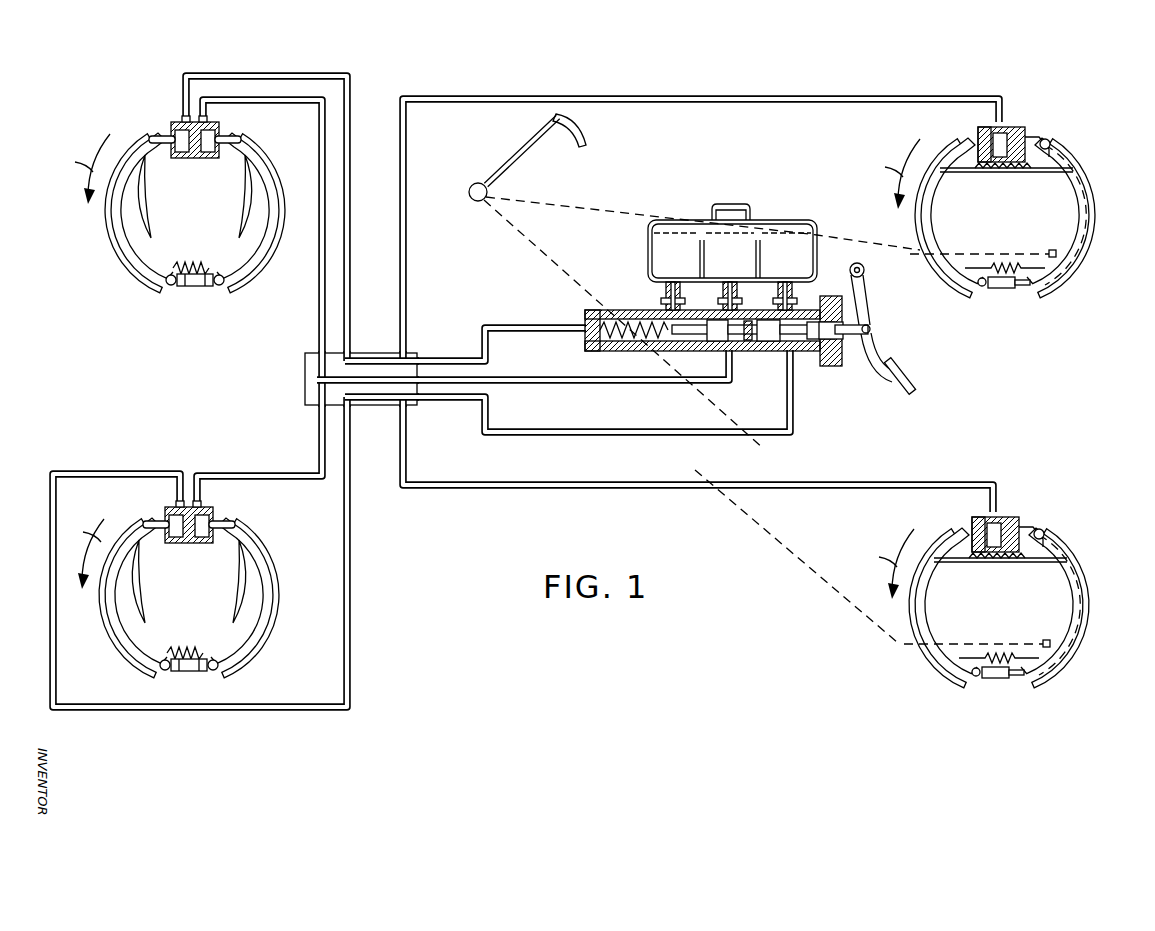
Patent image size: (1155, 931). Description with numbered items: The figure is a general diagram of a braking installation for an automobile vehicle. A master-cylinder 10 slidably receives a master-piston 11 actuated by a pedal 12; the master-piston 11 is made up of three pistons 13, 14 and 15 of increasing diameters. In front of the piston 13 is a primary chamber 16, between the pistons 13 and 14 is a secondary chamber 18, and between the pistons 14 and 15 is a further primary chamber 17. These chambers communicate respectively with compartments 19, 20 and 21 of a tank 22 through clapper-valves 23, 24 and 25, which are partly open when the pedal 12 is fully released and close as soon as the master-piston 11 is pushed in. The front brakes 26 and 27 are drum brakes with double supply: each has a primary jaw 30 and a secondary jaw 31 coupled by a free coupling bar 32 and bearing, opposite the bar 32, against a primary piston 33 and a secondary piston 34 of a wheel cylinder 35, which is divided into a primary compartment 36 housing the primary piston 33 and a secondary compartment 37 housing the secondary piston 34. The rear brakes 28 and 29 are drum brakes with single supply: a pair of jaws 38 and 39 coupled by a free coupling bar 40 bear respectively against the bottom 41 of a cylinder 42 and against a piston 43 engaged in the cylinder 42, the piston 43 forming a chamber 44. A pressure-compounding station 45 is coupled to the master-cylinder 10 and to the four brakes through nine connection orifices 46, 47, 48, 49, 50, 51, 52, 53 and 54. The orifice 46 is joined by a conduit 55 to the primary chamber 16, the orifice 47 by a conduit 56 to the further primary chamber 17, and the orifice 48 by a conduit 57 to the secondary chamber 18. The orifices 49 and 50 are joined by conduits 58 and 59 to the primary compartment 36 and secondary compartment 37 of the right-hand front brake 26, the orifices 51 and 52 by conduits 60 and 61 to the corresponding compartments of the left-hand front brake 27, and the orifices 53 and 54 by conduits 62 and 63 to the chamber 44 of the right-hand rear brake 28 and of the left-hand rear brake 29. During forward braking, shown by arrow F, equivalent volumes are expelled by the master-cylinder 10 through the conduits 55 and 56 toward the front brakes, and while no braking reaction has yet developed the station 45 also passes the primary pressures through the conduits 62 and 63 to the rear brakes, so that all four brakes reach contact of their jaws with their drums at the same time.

The master-cylinder 10 is at (746, 321).
The master-piston 11 is at (853, 332).
The pedal 12 is at (912, 380).
The piston 13 is at (712, 340).
The piston 14 is at (775, 352).
The piston 15 is at (838, 360).
The primary chamber 16 is at (626, 350).
The further primary chamber 17 is at (814, 352).
The secondary chamber 18 is at (752, 352).
The compartment 19 is at (664, 262).
The compartment 20 is at (778, 262).
The compartment 21 is at (718, 262).
The tank 22 is at (732, 231).
The clapper-valve 23 is at (664, 306).
The clapper-valve 24 is at (779, 306).
The clapper-valve 25 is at (724, 306).
The front brake 26 is at (181, 200).
The front brake 27 is at (191, 589).
The rear brake 28 is at (999, 206).
The rear brake 29 is at (988, 594).
The primary jaw 30 is at (118, 213).
The secondary jaw 31 is at (260, 214).
The free coupling bar 32 is at (195, 293).
The primary piston 33 is at (199, 138).
The secondary piston 34 is at (234, 118).
The wheel cylinder 35 is at (165, 99).
The primary compartment 36 is at (169, 165).
The secondary compartment 37 is at (217, 165).
The jaw 38 is at (937, 218).
The jaw 39 is at (1078, 218).
The free coupling bar 40 is at (1005, 297).
The bottom 41 is at (959, 135).
The cylinder 42 is at (1001, 121).
The piston 43 is at (1061, 135).
The chamber 44 is at (1014, 119).
The pressure-compounding station 45 is at (351, 373).
The connection orifice 46 is at (337, 355).
The connection orifice 47 is at (336, 406).
The connection orifice 48 is at (316, 381).
The connection orifice 49 is at (350, 357).
The connection orifice 50 is at (318, 352).
The connection orifice 51 is at (352, 404).
The connection orifice 52 is at (316, 406).
The connection orifice 53 is at (410, 355).
The connection orifice 54 is at (410, 406).
The conduit 55 is at (503, 326).
The conduit 56 is at (548, 431).
The conduit 57 is at (532, 378).
The conduit 58 is at (352, 192).
The conduit 59 is at (319, 192).
The conduit 60 is at (350, 584).
The conduit 61 is at (222, 472).
The conduit 62 is at (406, 300).
The conduit 63 is at (670, 482).